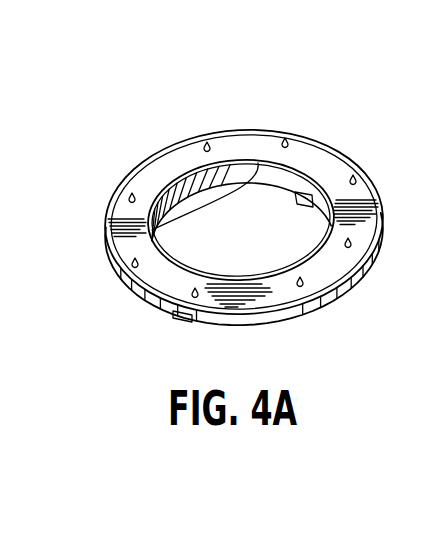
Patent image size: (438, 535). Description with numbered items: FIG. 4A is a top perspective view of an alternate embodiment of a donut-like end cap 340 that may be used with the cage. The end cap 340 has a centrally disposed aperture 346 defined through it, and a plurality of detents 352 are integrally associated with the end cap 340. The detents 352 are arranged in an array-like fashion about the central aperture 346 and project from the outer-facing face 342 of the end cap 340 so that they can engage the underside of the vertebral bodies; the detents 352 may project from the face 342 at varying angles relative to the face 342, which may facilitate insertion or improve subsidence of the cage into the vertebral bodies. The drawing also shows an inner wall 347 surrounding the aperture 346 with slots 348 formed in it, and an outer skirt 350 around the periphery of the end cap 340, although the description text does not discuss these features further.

The end cap 340 is at (248, 79).
The face 342 is at (325, 160).
The aperture 346 is at (258, 258).
The inner wall 347 is at (192, 176).
The slots 348 is at (258, 163).
The outer skirt 350 is at (278, 291).
The detents 352 is at (355, 240).